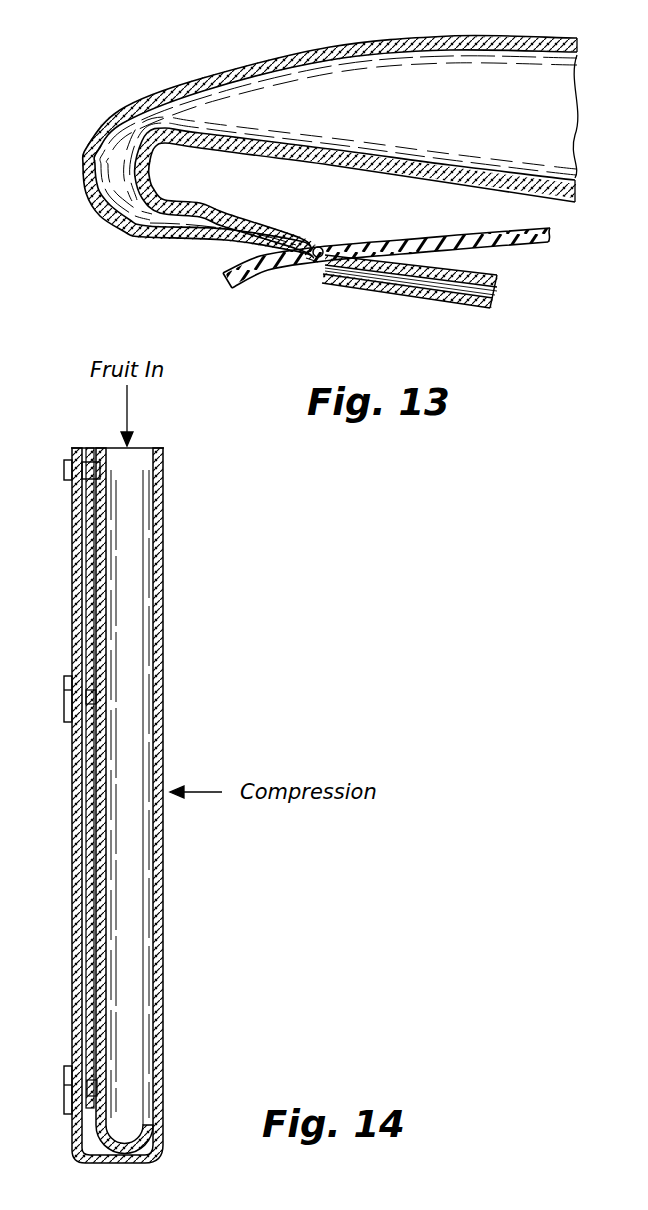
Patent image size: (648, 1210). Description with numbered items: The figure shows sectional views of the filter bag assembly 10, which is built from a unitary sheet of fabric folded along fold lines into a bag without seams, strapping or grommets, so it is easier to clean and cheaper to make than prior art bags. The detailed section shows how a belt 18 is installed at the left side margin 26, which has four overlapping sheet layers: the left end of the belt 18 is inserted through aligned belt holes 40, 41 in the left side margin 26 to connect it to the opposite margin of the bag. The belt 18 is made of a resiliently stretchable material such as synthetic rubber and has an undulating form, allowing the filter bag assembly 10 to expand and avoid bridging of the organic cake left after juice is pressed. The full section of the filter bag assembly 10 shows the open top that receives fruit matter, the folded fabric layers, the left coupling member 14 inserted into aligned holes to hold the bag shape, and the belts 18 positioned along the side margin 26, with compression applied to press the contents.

In FIG. 14, the filter bag assembly 10 is at (190, 625).
In FIG. 14, the left coupling member 14 is at (66, 466).
In FIG. 13, the belt 18 is at (442, 230).
In FIG. 14, the belt 18 is at (65, 700).
In FIG. 13, the left side margin 26 is at (365, 294).
In FIG. 13, the belt hole 40 is at (324, 249).
In FIG. 13, the belt hole 41 is at (311, 263).